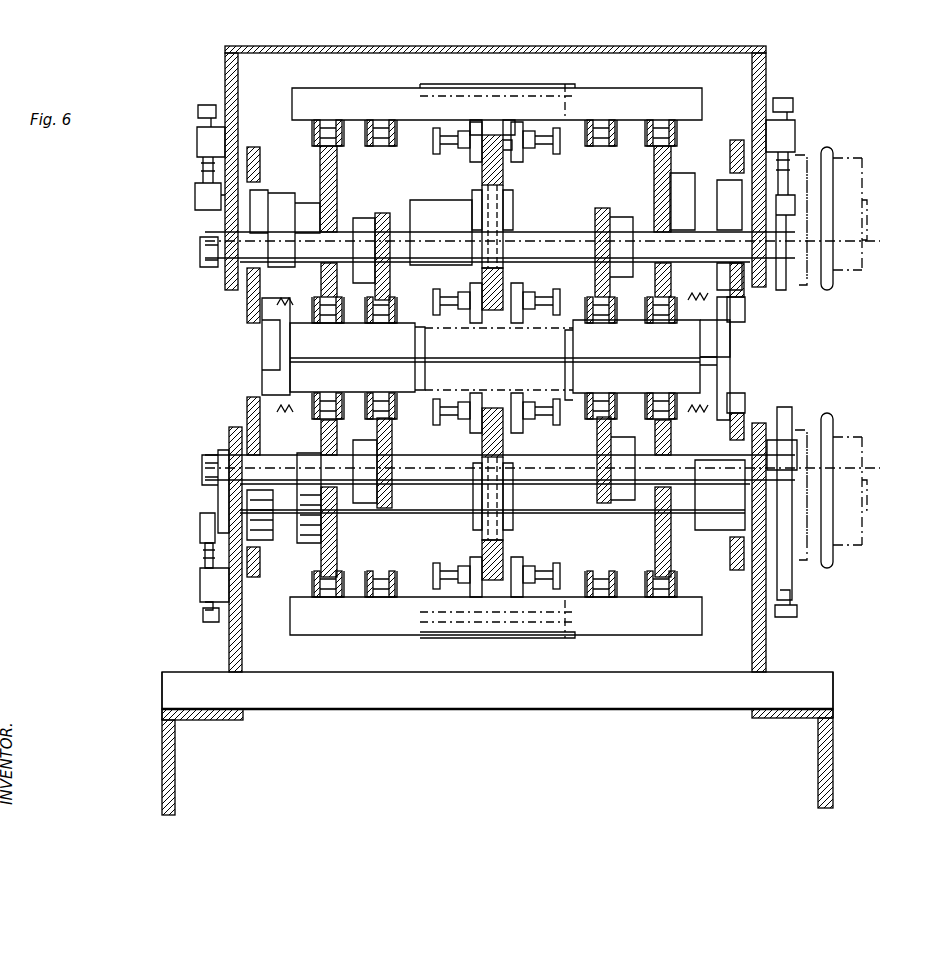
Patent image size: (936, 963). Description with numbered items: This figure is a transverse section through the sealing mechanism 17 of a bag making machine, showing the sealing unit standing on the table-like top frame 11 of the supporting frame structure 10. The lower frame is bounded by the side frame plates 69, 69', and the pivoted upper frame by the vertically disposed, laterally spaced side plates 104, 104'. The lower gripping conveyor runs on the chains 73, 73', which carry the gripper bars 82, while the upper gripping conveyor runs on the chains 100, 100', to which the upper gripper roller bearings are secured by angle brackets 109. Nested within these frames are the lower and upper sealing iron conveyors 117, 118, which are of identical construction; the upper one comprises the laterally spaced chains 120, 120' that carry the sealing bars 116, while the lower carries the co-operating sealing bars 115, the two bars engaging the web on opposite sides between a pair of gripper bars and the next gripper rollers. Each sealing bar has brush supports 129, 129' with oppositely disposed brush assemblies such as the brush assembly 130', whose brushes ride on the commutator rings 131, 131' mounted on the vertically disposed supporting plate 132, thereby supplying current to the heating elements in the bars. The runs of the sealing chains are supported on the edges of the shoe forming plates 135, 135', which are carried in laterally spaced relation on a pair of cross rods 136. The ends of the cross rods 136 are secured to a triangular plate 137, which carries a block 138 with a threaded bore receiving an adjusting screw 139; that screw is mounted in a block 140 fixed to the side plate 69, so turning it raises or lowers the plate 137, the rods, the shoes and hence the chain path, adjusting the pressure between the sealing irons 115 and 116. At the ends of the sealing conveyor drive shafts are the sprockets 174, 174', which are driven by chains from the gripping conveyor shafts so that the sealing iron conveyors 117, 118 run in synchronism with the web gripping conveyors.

The supporting frame structure 10 is at (156, 763).
The top frame 11 is at (162, 720).
The sealing mechanism 17 is at (478, 46).
The side frame plate 69 is at (248, 362).
The side frame plate 69' is at (521, 362).
The chain 73 is at (359, 495).
The chain 73' is at (628, 495).
The gripper bar 82 is at (394, 628).
The chain 100 is at (482, 104).
The chain 100' is at (686, 133).
The side plate 104 is at (201, 146).
The side plate 104' is at (799, 347).
The angle bracket 109 is at (496, 349).
The sealing bar 115 is at (540, 137).
The sealing bar 116 is at (495, 345).
The lower sealing iron conveyor 117 is at (568, 644).
The upper sealing iron conveyor 118 is at (581, 83).
The chain 120 is at (345, 368).
The chain 120' is at (638, 369).
The brush support 129 is at (446, 359).
The brush support 129' is at (552, 359).
The brush assembly 130' is at (553, 276).
The commutator ring 131 is at (471, 357).
The commutator ring 131' is at (488, 114).
The supporting plate 132 is at (505, 176).
The shoe forming plate 135 is at (375, 221).
The shoe forming plate 135' is at (609, 221).
The cross rod 136 is at (414, 258).
The triangular plate 137 is at (218, 496).
The block 138 is at (200, 530).
The adjusting screw 139 is at (203, 612).
The block 140 is at (200, 585).
The sprocket 174 is at (832, 208).
The sprocket 174' is at (854, 481).